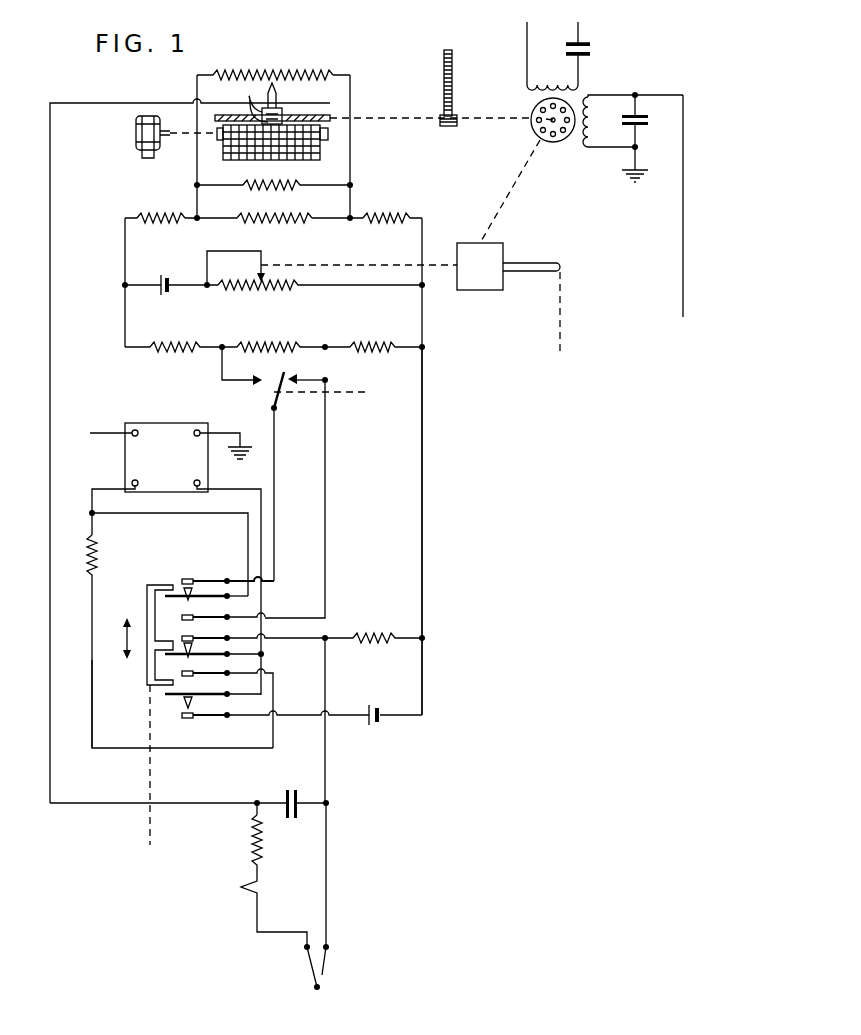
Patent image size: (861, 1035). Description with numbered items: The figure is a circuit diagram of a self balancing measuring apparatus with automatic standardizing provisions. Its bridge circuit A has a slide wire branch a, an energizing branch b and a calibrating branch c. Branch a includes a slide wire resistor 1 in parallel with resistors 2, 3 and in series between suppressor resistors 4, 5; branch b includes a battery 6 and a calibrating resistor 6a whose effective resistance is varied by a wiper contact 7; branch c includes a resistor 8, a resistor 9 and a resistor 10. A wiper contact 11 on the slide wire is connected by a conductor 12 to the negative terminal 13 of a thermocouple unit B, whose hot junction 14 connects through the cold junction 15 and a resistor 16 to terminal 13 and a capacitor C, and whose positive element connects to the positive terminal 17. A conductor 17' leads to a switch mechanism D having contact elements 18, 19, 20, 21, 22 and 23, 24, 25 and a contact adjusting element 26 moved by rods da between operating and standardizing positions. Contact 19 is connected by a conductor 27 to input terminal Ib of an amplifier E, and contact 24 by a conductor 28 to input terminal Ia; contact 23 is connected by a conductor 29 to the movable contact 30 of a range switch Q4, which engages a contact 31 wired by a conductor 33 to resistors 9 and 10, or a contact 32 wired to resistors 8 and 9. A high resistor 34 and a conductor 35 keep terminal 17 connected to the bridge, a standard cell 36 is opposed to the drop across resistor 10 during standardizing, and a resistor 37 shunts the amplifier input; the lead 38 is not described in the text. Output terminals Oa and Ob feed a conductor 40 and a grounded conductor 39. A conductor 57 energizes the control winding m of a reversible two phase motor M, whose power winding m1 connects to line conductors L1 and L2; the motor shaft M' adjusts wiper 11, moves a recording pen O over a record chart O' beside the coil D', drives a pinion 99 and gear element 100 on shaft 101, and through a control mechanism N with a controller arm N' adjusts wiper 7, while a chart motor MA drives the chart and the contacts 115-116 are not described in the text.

The slide wire resistor 1 is at (270, 78).
The resistor 2 is at (280, 193).
The resistor 3 is at (270, 226).
The suppressor resistor 4 is at (161, 226).
The suppressor resistor 5 is at (385, 226).
The battery 6 is at (167, 276).
The calibrating resistor 6a is at (262, 290).
The wiper contact 7 is at (255, 278).
The resistor 8 is at (178, 340).
The resistor 9 is at (272, 340).
The resistor 10 is at (376, 340).
The wiper contact 11 is at (278, 99).
The conductor 12 is at (50, 440).
The negative output terminal 13 is at (258, 800).
The thermocouple hot junction 14 is at (326, 977).
The thermocouple cold junction 15 is at (246, 893).
The resistor 16 is at (252, 838).
The positive terminal 17 is at (344, 870).
The conductor 17' is at (346, 721).
The contact element 18 is at (192, 640).
The contact element 19 is at (226, 657).
The contact element 20 is at (224, 676).
The contact element 21 is at (208, 692).
The contact element 22 is at (222, 718).
The contact element 23 is at (224, 578).
The contact element 24 is at (224, 599).
The contact element 25 is at (224, 620).
The contact adjusting element 26 is at (148, 683).
The conductor 27 is at (263, 597).
The conductor 28 is at (157, 513).
The conductor 29 is at (276, 492).
The movable contact 30 is at (273, 393).
The switch contact 31 is at (308, 369).
The switch contact 32 is at (242, 366).
The conductor 33 is at (327, 492).
The resistor 34 is at (386, 632).
The conductor 35 is at (424, 492).
The standard cell 36 is at (375, 725).
The resistor 37 is at (88, 553).
The conductor 38 is at (92, 654).
The grounded conductor 39 is at (230, 431).
The conductor 40 is at (104, 432).
The conductor 57 is at (683, 246).
The pinion 99 is at (448, 127).
The actuating gear element 100 is at (453, 74).
The shaft 101 is at (505, 118).
The contacts 115-116 is at (332, 393).
The bridge circuit A is at (108, 227).
The thermocouple unit B is at (296, 980).
The capacitor C is at (291, 790).
The switch mechanism D is at (135, 615).
The deflecting coil D' is at (263, 147).
The amplifier E is at (170, 423).
The rebalancing motor M is at (529, 137).
The motor shaft M' is at (430, 101).
The chart motor MA is at (136, 134).
The control mechanism N is at (496, 215).
The controller arm N' is at (531, 248).
The recording pen O is at (249, 100).
The record chart O' is at (331, 163).
The amplifier output terminal Oa is at (135, 430).
The amplifier output terminal Ob is at (197, 430).
The amplifier input terminal Ia is at (134, 486).
The amplifier input terminal Ib is at (199, 486).
The alternating current supply line conductor L1 is at (527, 30).
The alternating current supply line conductor L2 is at (580, 30).
The control winding m is at (594, 118).
The power winding m1 is at (556, 84).
The range switch Q4 is at (281, 402).
The slide wire branch a is at (130, 219).
The energizing branch b is at (132, 287).
The calibrating branch c is at (140, 350).
The rods da is at (150, 842).